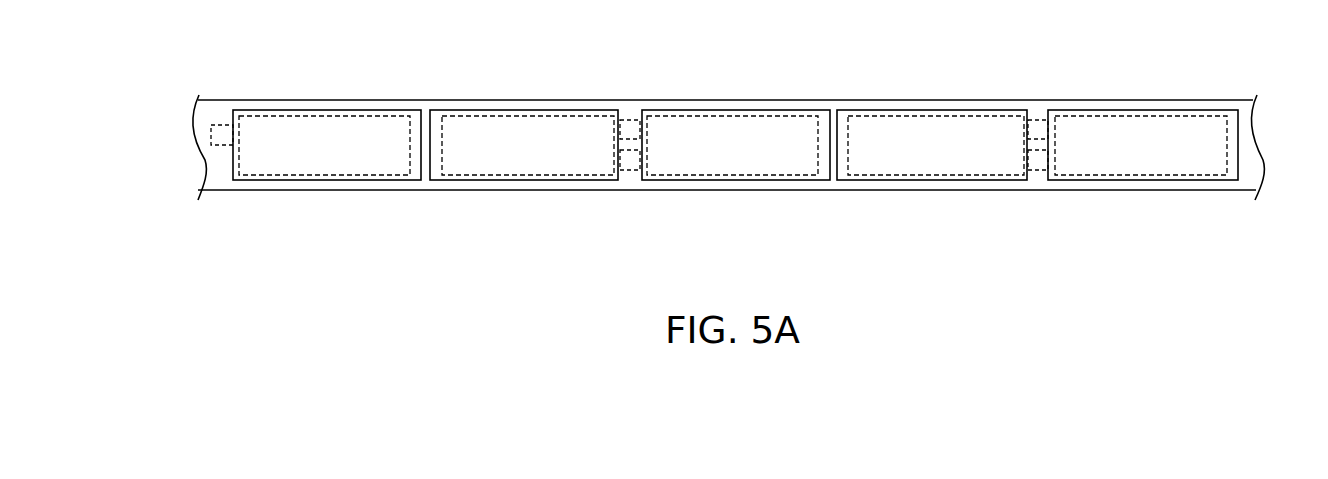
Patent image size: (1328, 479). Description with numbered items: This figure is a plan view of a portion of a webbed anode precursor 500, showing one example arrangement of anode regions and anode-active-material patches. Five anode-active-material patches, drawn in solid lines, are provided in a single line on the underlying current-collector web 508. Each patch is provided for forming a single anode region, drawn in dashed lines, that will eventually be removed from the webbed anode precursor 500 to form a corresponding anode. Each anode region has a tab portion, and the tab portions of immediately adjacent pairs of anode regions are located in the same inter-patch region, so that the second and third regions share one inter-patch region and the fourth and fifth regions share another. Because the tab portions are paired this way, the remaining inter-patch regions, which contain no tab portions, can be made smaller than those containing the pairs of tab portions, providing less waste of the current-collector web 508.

The webbed anode precursor 500 is at (789, 51).
The current-collector web 508 is at (343, 192).